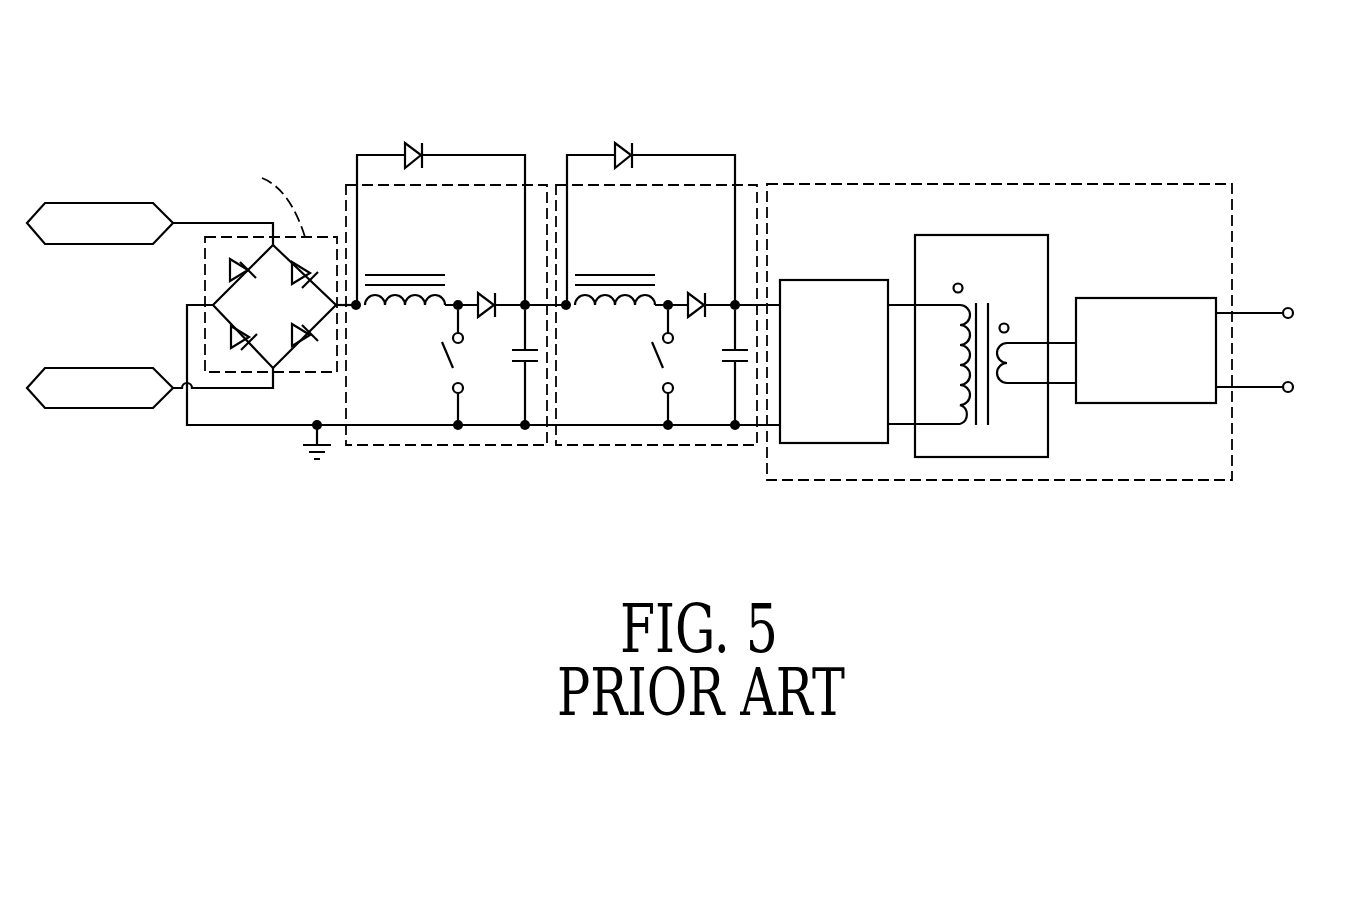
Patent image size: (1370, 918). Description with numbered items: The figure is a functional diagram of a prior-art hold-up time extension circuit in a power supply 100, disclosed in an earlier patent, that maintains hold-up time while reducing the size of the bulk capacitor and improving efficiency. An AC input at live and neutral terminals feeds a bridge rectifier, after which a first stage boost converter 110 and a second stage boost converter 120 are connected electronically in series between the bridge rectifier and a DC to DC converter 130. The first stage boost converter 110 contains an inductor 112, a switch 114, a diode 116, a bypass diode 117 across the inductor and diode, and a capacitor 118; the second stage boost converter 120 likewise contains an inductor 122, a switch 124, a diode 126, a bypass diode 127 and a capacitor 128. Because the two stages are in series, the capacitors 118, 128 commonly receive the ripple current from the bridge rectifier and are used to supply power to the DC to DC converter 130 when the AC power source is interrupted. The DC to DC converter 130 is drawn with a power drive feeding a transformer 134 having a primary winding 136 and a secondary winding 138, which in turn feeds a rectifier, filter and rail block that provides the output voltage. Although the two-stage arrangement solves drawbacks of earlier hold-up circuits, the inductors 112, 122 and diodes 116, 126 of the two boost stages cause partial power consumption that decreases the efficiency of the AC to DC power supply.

The prior art switching power supply 100 is at (684, 285).
The first stage boost converter 110 is at (447, 299).
The inductor 112 is at (387, 274).
The switch of first stage 114 is at (452, 360).
The diode 116 is at (483, 292).
The bypass diode of first stage 117 is at (411, 141).
The capacitor 118 is at (515, 363).
The second stage boost converter 120 is at (657, 299).
The inductor 122 is at (623, 266).
The switch of second stage 124 is at (625, 367).
The diode 126 is at (736, 220).
The bypass diode of second stage 127 is at (666, 130).
The capacitor 128 is at (693, 397).
The DC to DC converter 130 is at (1054, 358).
The transformer 134 is at (1008, 266).
The transformer primary winding 136 is at (940, 425).
The transformer secondary winding 138 is at (1022, 383).